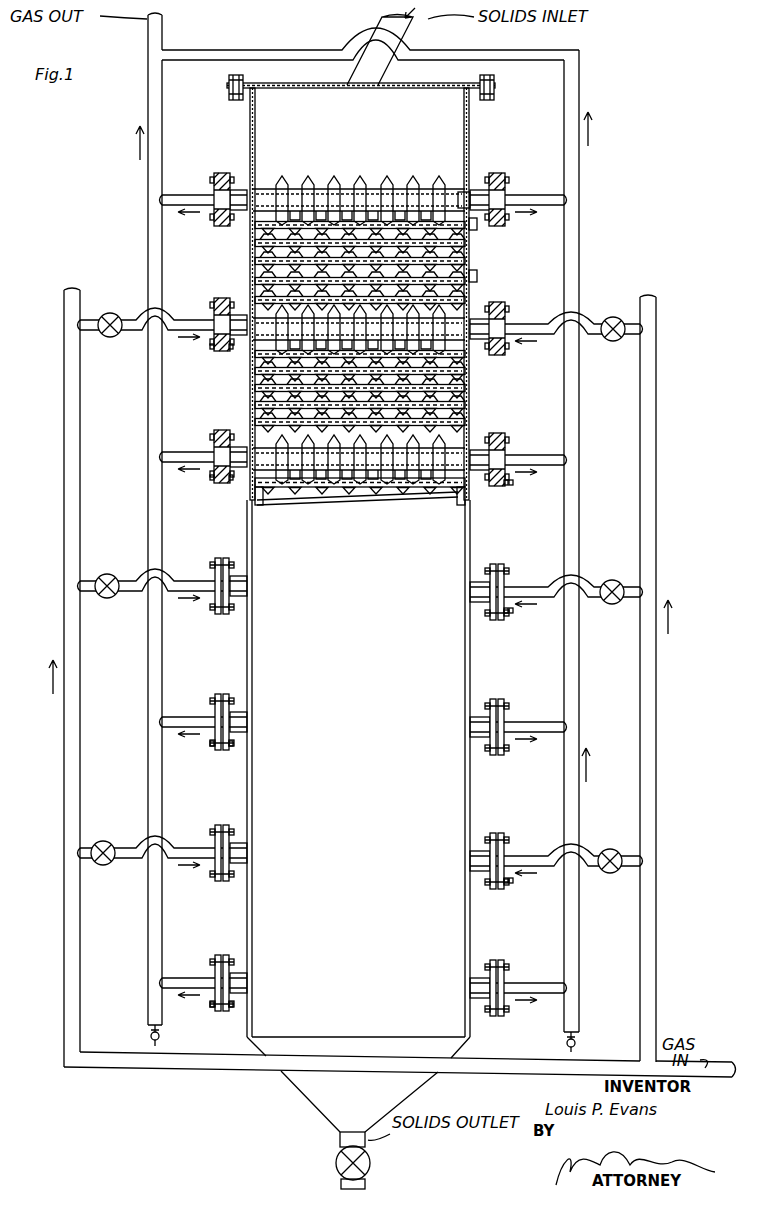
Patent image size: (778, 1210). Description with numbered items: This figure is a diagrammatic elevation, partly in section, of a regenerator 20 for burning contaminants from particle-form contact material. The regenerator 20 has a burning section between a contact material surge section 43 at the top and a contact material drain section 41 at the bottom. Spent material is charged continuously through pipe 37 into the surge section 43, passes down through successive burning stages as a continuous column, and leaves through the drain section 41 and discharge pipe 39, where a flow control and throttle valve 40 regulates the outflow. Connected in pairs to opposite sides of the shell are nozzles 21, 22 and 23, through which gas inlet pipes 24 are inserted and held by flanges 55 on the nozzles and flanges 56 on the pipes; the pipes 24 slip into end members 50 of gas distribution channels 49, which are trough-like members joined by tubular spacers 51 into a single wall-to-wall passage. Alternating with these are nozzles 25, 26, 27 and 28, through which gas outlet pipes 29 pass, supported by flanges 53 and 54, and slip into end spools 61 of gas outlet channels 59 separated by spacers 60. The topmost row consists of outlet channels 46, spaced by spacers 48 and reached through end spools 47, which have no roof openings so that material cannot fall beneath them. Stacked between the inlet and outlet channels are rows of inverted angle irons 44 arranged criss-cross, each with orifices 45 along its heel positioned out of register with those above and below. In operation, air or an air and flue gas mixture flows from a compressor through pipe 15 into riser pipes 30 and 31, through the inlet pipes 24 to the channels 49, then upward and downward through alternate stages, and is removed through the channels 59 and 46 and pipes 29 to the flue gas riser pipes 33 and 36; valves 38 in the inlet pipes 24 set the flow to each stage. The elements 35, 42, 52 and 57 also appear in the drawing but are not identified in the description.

The pipe 15 is at (738, 1075).
The regenerator 20 is at (247, 540).
The nozzle 21 is at (232, 318).
The nozzle 22 is at (228, 614).
The nozzle 23 is at (232, 830).
The gas inlet pipe 24 is at (178, 318).
The nozzle 25 is at (232, 184).
The nozzle 26 is at (226, 445).
The nozzle 27 is at (226, 695).
The nozzle 28 is at (228, 1012).
The gas outlet pipe 29 is at (178, 186).
The gas inlet riser pipe 30 is at (64, 540).
The gas inlet riser pipe 31 is at (657, 457).
The gas outlet riser pipe 33 is at (580, 496).
The gas outlet header 35 is at (292, 52).
The gas outlet riser duct 36 is at (165, 37).
The pipe 37 is at (413, 30).
The valve 38 is at (111, 312).
The discharge pipe 39 is at (340, 1140).
The flow control and throttle valve 40 is at (371, 1158).
The contact material drain section 41 is at (400, 1098).
The bolt 42 is at (231, 80).
The contact material surge section 43 is at (250, 118).
The inverted angle iron 44 is at (255, 246).
The orifice 45 is at (478, 226).
The outlet channel 46 is at (463, 190).
The end spool 47 is at (272, 190).
The spacer 48 is at (364, 182).
The gas distribution channel 49 is at (280, 350).
The end member 50 is at (470, 320).
The tubular spacer 51 is at (466, 375).
The bearing 52 is at (478, 275).
The flange 53 is at (230, 481).
The flange 54 is at (210, 480).
The flange 55 is at (229, 350).
The flange 56 is at (210, 348).
The drain valve 57 is at (150, 1038).
The gas outlet channel 59 is at (378, 492).
The spacer 60 is at (330, 498).
The end spool 61 is at (258, 503).